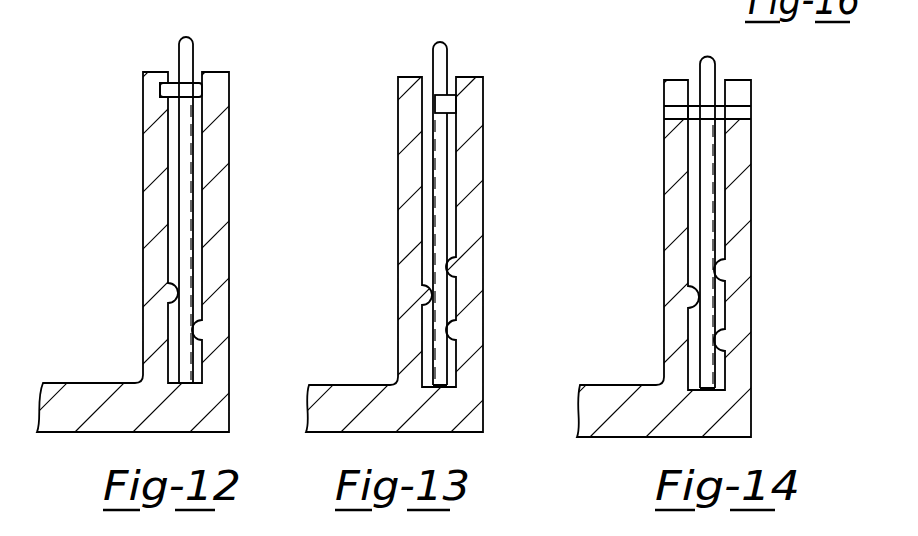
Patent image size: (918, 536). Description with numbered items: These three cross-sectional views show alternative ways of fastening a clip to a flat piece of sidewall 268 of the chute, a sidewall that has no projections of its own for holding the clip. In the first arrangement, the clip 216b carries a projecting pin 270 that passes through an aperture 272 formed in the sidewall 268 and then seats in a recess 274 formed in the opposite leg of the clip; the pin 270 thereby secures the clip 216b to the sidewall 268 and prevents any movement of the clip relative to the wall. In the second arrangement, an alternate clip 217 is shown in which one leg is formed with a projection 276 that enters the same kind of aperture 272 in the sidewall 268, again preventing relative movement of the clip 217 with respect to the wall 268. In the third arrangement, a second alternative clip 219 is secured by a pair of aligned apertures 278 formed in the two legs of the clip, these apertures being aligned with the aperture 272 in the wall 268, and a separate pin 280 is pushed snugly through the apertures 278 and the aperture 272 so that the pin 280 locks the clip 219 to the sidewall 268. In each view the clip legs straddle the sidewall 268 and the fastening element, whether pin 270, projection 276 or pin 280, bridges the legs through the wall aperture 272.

In FIG. 12, the clip 216b is at (291, 136).
In FIG. 13, the clip 217 is at (485, 235).
In FIG. 14, the clip 219 is at (755, 102).
In FIG. 12, the sidewall 268 is at (166, 188).
In FIG. 13, the sidewall 268 is at (450, 60).
In FIG. 14, the sidewall 268 is at (698, 72).
In FIG. 12, the projecting pin 270 is at (160, 85).
In FIG. 12, the aperture 272 is at (186, 84).
In FIG. 13, the aperture 272 is at (443, 93).
In FIG. 14, the aperture 272 is at (708, 106).
In FIG. 12, the recess 274 is at (163, 99).
In FIG. 13, the projection 276 is at (440, 115).
In FIG. 14, the aligned apertures 278 is at (664, 112).
In FIG. 14, the pin 280 is at (664, 115).